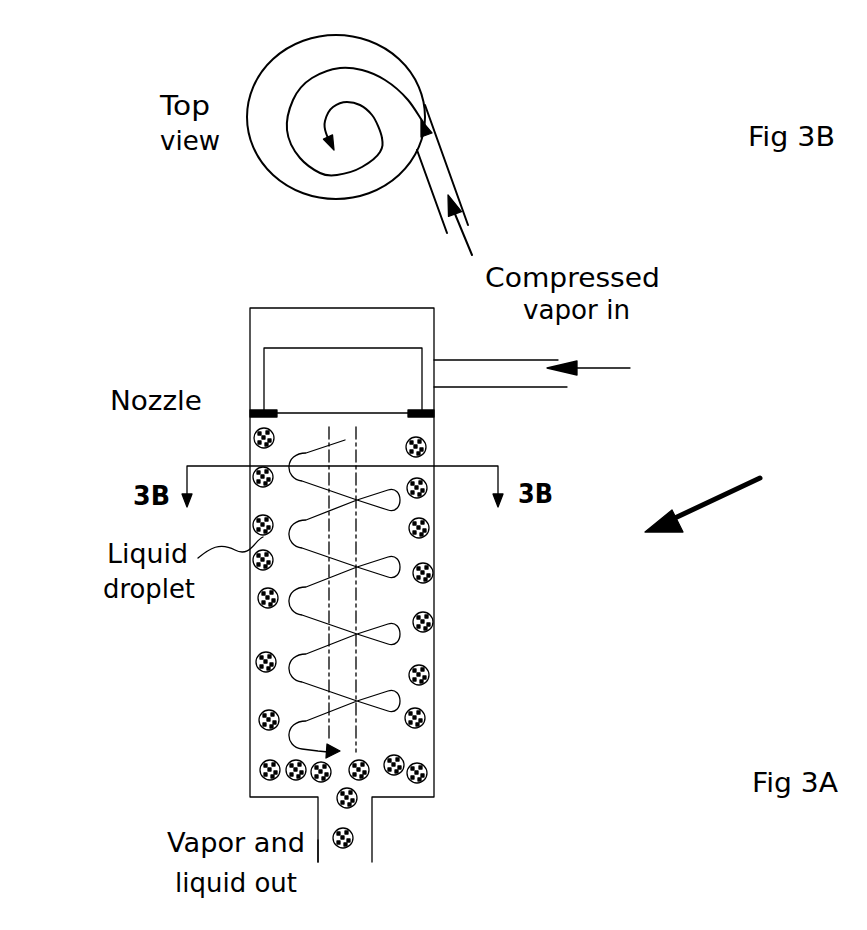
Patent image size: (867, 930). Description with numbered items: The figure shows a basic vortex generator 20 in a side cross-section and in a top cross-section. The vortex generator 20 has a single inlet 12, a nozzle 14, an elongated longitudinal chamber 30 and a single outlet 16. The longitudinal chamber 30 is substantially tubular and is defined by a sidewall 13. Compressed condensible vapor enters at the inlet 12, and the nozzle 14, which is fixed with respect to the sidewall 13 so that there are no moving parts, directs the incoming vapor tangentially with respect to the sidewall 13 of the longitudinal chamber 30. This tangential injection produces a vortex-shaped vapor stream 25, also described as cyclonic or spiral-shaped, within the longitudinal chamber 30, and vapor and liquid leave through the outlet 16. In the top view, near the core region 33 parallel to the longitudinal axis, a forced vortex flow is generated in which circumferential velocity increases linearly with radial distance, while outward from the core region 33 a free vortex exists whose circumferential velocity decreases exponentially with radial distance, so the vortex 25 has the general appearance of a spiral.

In FIG. 3B, the inlet 12 is at (445, 162).
In FIG. 3A, the inlet 12 is at (493, 387).
In FIG. 3B, the sidewall 13 is at (275, 180).
In FIG. 3A, the sidewall 13 is at (436, 753).
In FIG. 3A, the nozzle 14 is at (290, 373).
In FIG. 3A, the outlet 16 is at (372, 845).
In FIG. 3A, the vortex generator 20 is at (827, 490).
In FIG. 3B, the vortex-shaped vapor stream 25 is at (397, 91).
In FIG. 3A, the vortex-shaped vapor stream 25 is at (350, 592).
In FIG. 3B, the longitudinal chamber 30 is at (345, 70).
In FIG. 3A, the longitudinal chamber 30 is at (408, 597).
In FIG. 3B, the core region 33 is at (340, 123).
In FIG. 3A, the core region 33 is at (343, 667).